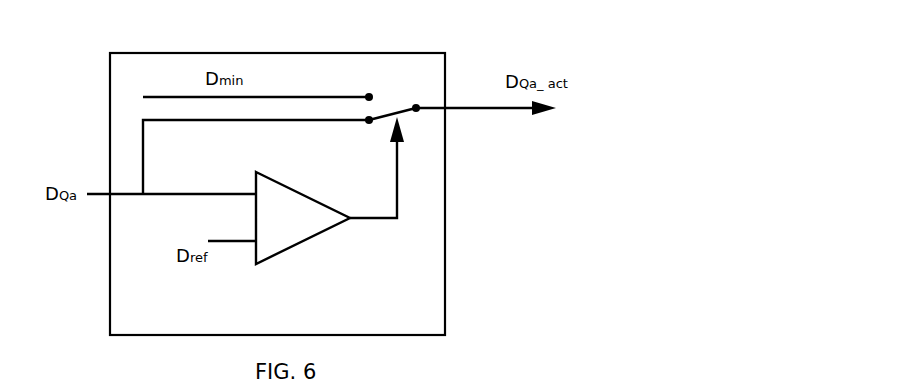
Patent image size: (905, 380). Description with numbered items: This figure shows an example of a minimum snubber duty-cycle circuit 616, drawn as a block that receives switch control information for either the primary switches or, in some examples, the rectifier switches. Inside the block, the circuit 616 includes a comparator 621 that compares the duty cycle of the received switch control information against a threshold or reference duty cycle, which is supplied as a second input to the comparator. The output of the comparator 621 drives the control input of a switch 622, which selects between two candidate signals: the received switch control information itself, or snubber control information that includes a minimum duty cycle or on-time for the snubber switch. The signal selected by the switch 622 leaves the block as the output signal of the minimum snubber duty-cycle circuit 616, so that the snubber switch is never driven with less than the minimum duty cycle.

The minimum snubber duty-cycle circuit 616 is at (445, 303).
The comparator 621 is at (295, 246).
The switch 622 is at (375, 137).